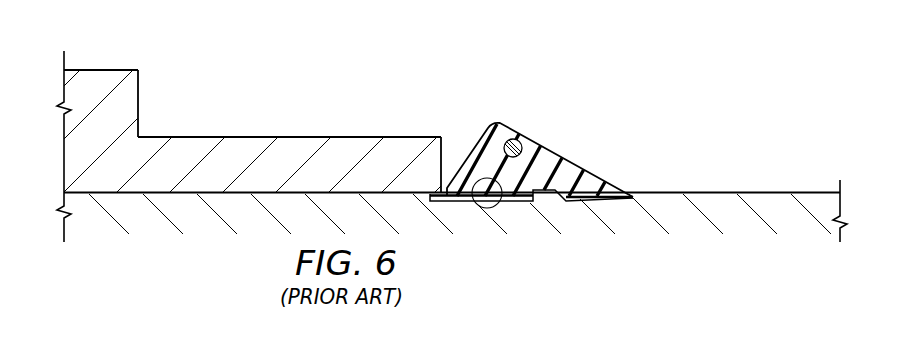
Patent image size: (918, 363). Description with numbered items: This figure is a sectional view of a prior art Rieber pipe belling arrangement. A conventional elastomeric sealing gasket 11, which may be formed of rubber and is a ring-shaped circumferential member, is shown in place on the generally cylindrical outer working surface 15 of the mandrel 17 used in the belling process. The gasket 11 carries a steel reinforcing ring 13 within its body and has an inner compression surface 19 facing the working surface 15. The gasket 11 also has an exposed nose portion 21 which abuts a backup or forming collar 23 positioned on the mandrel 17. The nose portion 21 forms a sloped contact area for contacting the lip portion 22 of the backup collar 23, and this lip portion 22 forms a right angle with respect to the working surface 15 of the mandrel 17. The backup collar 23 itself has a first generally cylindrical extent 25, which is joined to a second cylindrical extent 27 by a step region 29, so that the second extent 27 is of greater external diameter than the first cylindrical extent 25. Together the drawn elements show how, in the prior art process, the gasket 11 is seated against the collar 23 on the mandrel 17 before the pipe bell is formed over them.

The elastomeric sealing gasket 11 is at (572, 170).
The steel reinforcing ring 13 is at (525, 143).
The outer working surface 15 is at (711, 193).
The mandrel 17 is at (773, 206).
The inner compression surface 19 is at (501, 200).
The nose portion 21 is at (466, 137).
The lip portion 22 is at (447, 148).
The backup collar 23 is at (297, 147).
The first generally cylindrical extent 25 is at (247, 136).
The second cylindrical extent 27 is at (108, 68).
The step region 29 is at (139, 100).